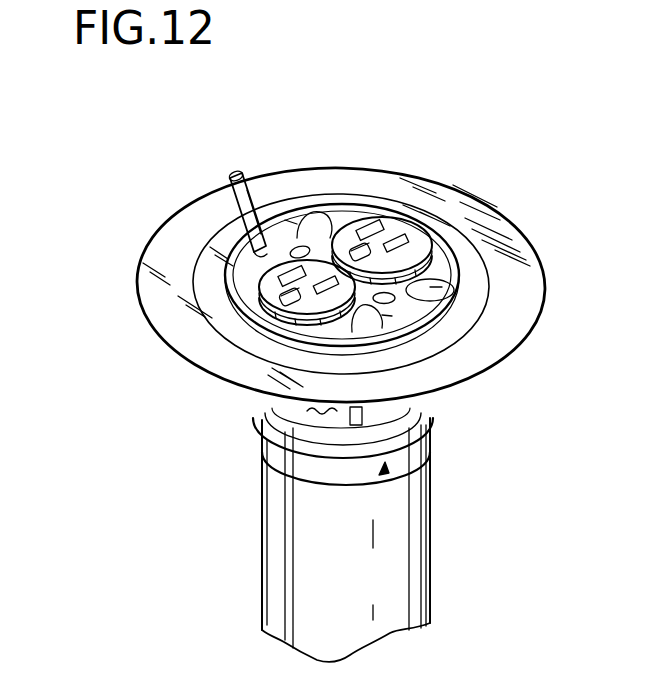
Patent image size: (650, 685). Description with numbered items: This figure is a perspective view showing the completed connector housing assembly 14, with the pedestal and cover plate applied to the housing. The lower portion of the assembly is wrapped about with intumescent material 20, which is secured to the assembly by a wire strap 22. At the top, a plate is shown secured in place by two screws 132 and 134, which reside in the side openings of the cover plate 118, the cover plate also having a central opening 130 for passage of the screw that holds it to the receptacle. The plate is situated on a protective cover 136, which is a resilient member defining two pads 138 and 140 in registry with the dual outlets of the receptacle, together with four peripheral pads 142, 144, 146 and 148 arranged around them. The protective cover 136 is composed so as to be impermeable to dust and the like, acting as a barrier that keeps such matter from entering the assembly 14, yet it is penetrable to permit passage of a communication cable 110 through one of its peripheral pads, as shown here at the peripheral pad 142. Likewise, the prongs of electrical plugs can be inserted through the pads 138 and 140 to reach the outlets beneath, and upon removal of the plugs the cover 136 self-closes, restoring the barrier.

The connector housing assembly 14 is at (475, 499).
The intumescent material 20 is at (372, 590).
The wire strap 22 is at (383, 480).
The communication cable 110 is at (250, 178).
The cover plate 118 is at (494, 221).
The central opening 130 is at (455, 270).
The screw 132 is at (294, 247).
The screw 134 is at (395, 299).
The protective cover 136 is at (452, 270).
The pad 138 is at (262, 308).
The pad 140 is at (412, 236).
The peripheral pad 142 is at (257, 283).
The peripheral pad 144 is at (318, 212).
The peripheral pad 146 is at (454, 284).
The peripheral pad 148 is at (393, 316).